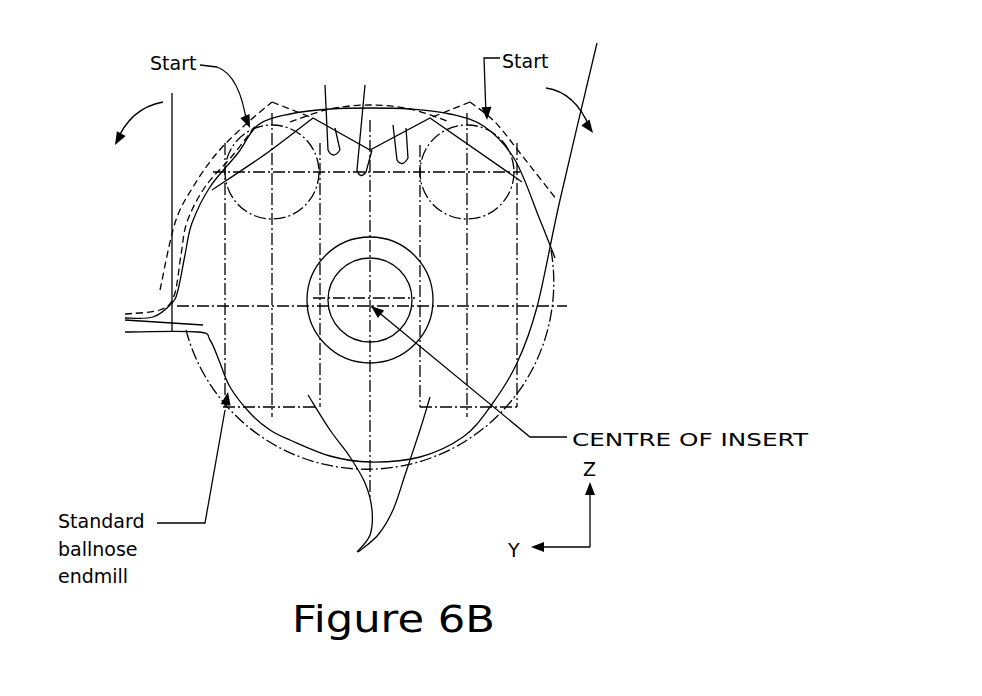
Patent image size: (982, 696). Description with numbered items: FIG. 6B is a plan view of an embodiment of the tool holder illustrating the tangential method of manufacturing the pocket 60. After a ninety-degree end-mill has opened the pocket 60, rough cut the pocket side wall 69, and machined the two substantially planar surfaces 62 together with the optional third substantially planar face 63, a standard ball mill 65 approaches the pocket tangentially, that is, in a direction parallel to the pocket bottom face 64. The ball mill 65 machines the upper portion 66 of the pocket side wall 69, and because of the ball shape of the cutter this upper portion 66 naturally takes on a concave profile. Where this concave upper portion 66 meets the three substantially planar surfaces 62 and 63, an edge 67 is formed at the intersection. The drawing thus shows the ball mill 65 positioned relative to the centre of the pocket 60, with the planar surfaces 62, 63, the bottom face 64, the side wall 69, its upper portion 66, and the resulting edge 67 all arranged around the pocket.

The pocket 60 is at (600, 263).
The substantially planar surfaces 62 is at (325, 85).
The third substantially planar face 63 is at (365, 85).
The pocket bottom face 64 is at (440, 425).
The standard ball mill 65 is at (369, 480).
The upper portion of the pocket side wall 66 is at (178, 229).
The edge 67 is at (395, 125).
The pocket side wall 69 is at (205, 240).